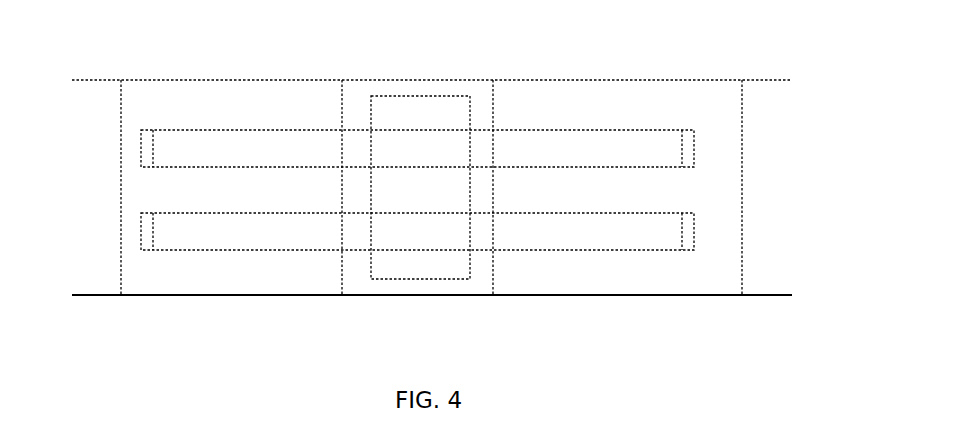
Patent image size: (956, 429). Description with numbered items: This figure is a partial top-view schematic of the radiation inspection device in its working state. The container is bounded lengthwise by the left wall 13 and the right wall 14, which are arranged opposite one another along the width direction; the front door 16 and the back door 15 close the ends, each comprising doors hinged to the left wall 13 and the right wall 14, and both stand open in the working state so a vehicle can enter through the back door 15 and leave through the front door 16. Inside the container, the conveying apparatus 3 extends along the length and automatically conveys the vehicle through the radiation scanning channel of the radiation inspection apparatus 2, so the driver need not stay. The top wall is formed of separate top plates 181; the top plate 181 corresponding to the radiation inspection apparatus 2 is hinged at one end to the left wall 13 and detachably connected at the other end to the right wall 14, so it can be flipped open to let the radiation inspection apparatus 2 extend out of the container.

The radiation inspection apparatus 2 is at (412, 108).
The conveying apparatus 3 is at (358, 243).
The left wall 13 is at (557, 296).
The right wall 14 is at (583, 79).
The back door 15 is at (773, 79).
The front door 16 is at (93, 79).
The top plate 181 is at (333, 98).